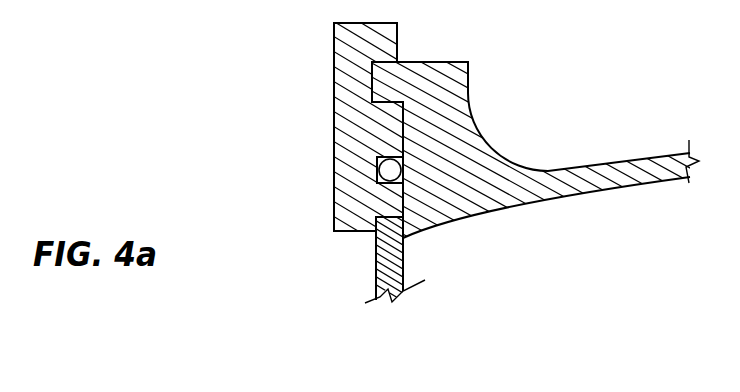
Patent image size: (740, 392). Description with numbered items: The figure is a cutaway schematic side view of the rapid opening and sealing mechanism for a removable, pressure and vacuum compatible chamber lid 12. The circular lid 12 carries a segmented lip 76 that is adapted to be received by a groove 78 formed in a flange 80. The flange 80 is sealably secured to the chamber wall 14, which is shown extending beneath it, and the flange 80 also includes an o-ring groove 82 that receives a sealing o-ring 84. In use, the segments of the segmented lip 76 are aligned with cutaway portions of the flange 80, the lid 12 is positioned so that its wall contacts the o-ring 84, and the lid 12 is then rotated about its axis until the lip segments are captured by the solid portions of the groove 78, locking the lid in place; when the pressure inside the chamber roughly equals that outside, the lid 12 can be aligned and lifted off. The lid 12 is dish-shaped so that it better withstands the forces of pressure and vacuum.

The lid 12 is at (593, 158).
The wall 14 is at (376, 248).
The segmented lip 76 is at (401, 84).
The groove 78 is at (373, 88).
The flange 80 is at (326, 104).
The o-ring groove 82 is at (377, 183).
The sealing o-ring 84 is at (383, 167).